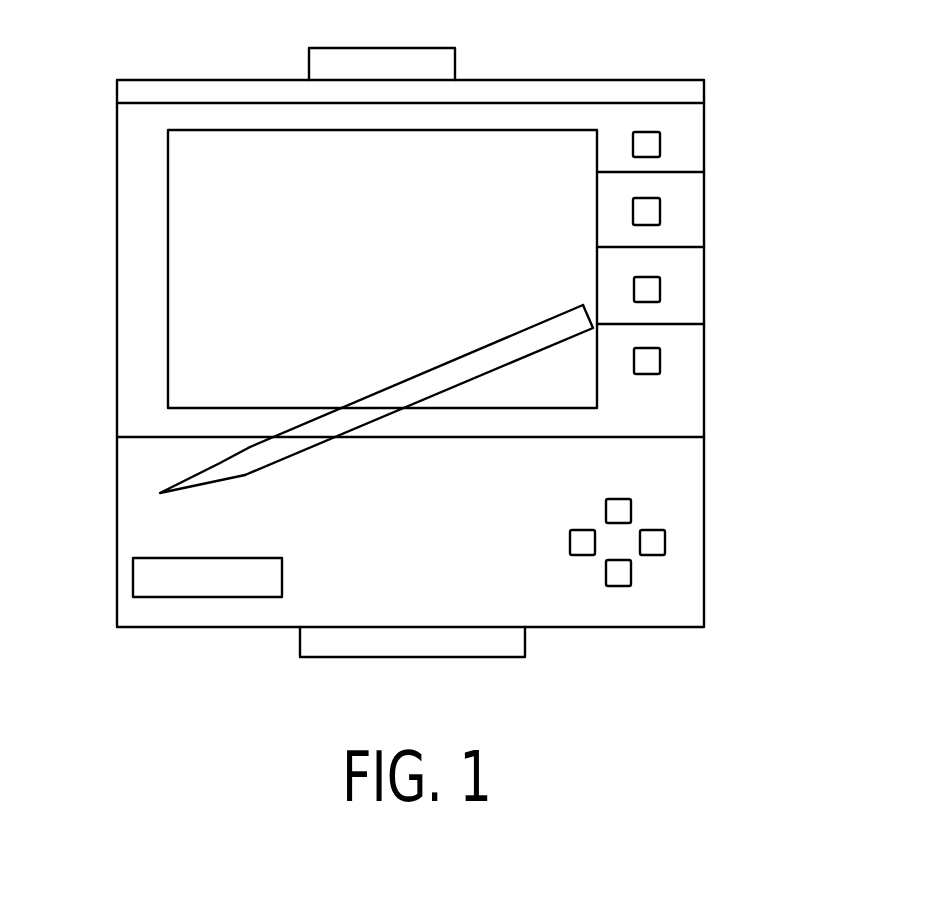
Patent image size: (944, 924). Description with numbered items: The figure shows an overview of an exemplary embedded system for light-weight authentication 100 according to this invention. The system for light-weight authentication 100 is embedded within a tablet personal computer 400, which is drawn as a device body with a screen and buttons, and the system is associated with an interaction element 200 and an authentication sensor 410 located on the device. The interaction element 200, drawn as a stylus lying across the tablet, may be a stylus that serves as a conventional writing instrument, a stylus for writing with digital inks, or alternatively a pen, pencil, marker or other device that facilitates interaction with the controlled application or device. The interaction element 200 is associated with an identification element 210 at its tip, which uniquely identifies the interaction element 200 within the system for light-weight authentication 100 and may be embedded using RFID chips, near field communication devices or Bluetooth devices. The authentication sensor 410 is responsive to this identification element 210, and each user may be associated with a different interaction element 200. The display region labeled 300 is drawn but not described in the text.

The system for light-weight authentication 100 is at (510, 640).
The interaction element 200 is at (402, 409).
The identification element 210 is at (220, 463).
The touch screen display 300 is at (215, 240).
The tablet personal computer 400 is at (660, 211).
The authentication sensor 410 is at (445, 62).